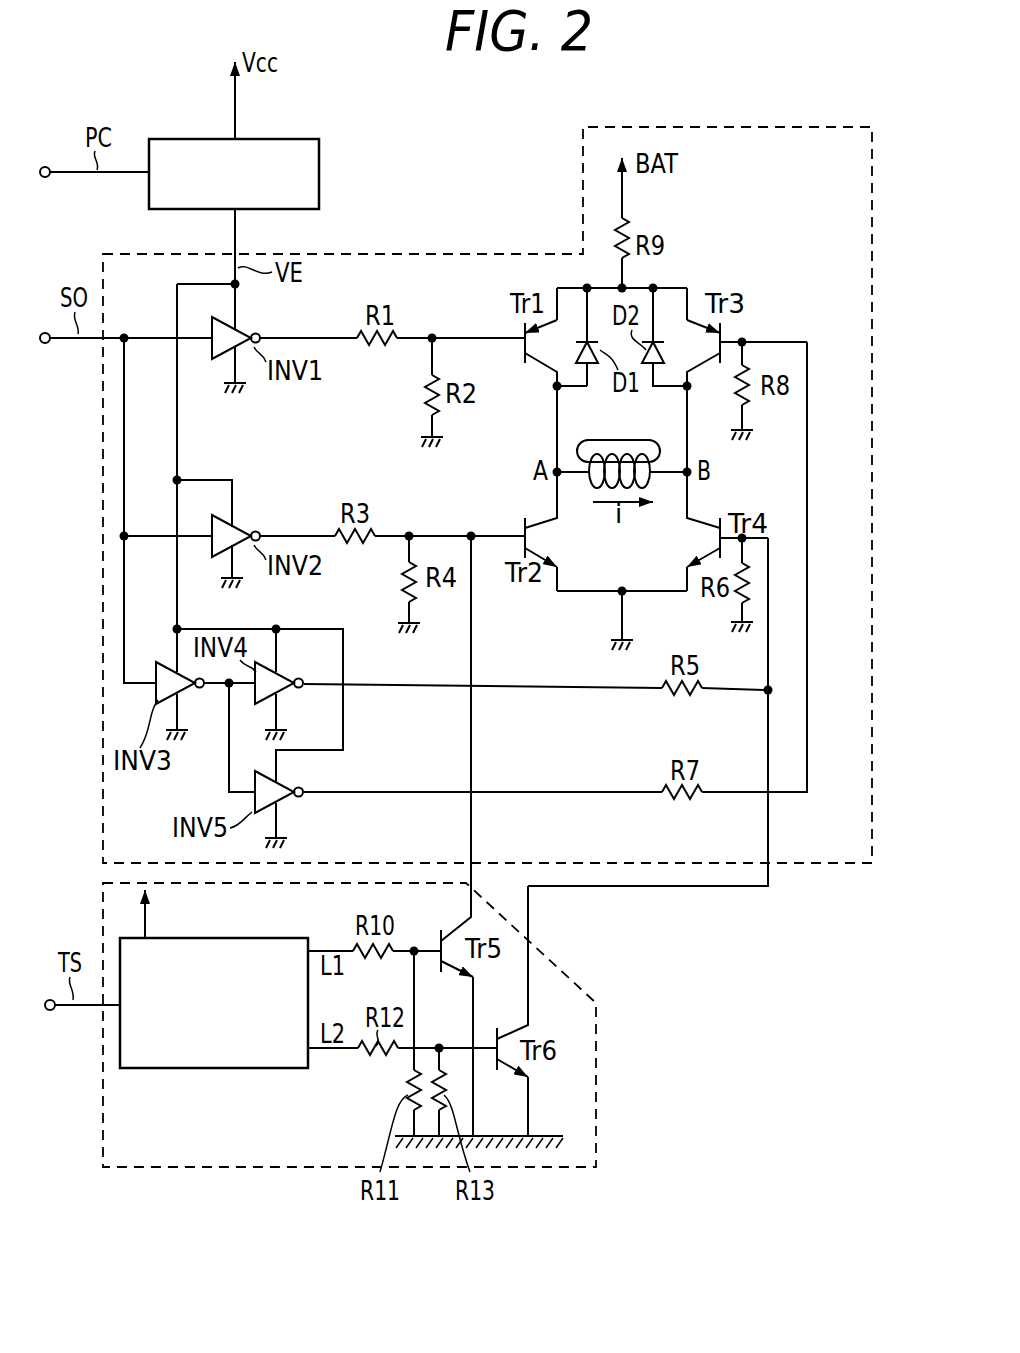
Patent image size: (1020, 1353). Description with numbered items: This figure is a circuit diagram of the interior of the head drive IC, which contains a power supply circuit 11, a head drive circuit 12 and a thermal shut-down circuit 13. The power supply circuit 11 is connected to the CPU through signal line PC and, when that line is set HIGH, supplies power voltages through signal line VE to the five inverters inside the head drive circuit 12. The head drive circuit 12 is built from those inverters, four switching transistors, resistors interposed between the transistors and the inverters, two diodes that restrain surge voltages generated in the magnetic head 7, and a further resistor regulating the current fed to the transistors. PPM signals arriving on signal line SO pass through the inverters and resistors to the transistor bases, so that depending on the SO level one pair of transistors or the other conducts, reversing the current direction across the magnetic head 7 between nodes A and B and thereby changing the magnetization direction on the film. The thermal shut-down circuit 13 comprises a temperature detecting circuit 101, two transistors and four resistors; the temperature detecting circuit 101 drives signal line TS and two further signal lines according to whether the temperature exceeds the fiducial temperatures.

The magnetic head 7 is at (641, 441).
The power supply circuit 11 is at (185, 137).
The head drive circuit 12 is at (838, 866).
The thermal shut-down circuit 13 is at (597, 1108).
The temperature detecting circuit 101 is at (183, 1070).